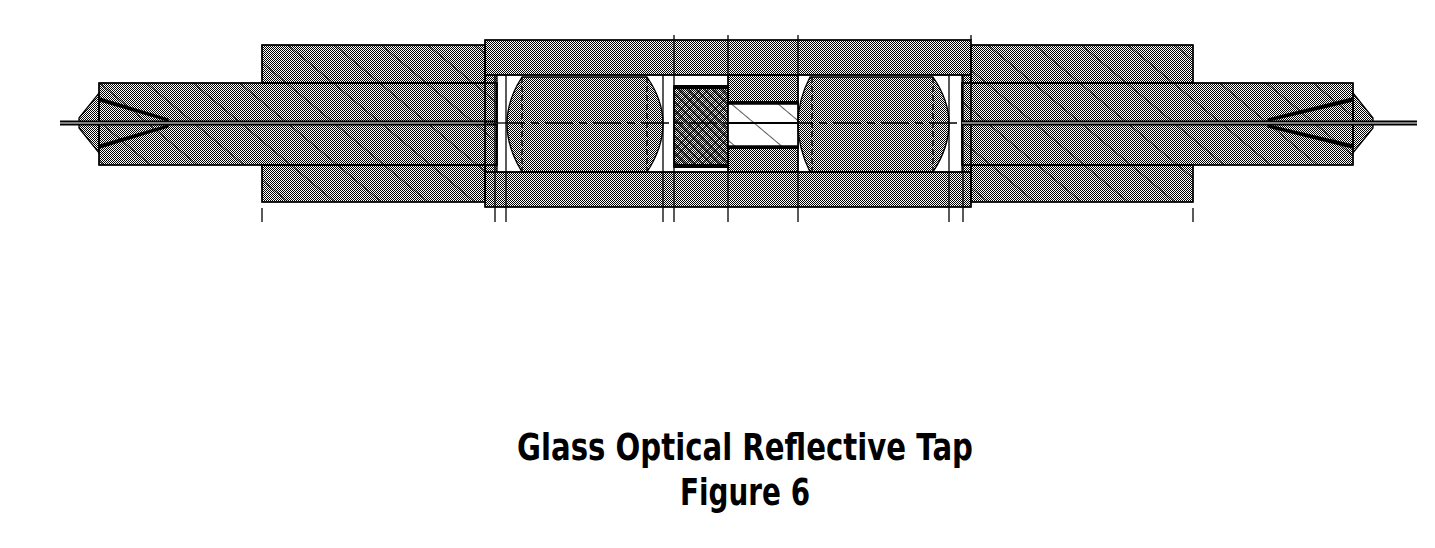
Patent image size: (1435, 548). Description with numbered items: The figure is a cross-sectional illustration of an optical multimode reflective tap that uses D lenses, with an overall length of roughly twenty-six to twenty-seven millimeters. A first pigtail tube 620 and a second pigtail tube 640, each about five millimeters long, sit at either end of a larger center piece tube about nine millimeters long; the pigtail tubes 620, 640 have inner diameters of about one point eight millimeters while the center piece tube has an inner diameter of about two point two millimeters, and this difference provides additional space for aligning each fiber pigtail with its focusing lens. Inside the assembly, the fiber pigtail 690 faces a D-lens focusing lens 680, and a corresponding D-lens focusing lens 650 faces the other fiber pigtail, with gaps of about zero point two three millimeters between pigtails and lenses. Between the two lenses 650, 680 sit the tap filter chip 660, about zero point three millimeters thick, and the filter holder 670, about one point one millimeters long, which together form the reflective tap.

The first pigtail tube 620 is at (294, 46).
The second pigtail tube 640 is at (1152, 47).
The D-lens focusing lens 650 is at (610, 177).
The reflective filter element 660 is at (686, 178).
The spacer 670 is at (744, 177).
The D-lens focusing lens 680 is at (838, 177).
The fiber pigtail 690 is at (1262, 83).